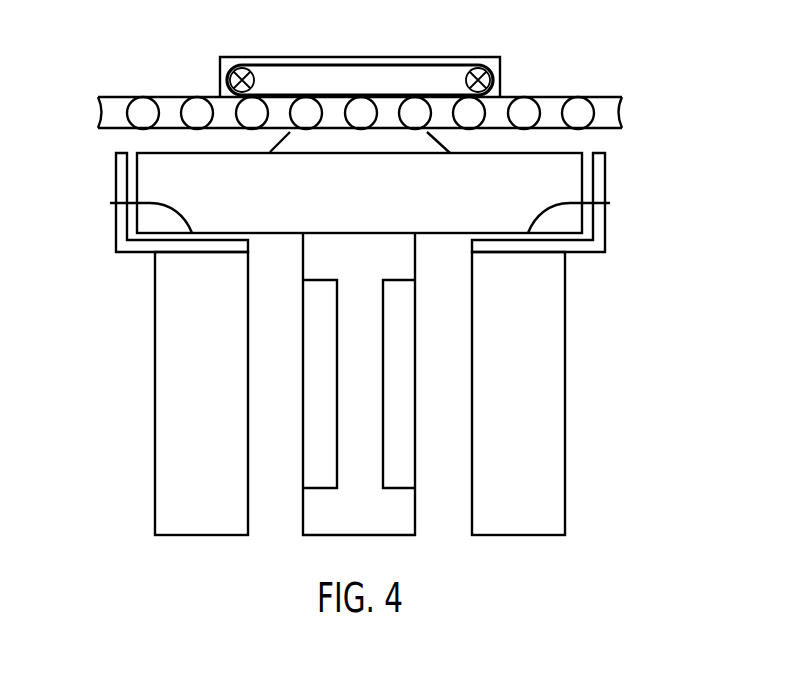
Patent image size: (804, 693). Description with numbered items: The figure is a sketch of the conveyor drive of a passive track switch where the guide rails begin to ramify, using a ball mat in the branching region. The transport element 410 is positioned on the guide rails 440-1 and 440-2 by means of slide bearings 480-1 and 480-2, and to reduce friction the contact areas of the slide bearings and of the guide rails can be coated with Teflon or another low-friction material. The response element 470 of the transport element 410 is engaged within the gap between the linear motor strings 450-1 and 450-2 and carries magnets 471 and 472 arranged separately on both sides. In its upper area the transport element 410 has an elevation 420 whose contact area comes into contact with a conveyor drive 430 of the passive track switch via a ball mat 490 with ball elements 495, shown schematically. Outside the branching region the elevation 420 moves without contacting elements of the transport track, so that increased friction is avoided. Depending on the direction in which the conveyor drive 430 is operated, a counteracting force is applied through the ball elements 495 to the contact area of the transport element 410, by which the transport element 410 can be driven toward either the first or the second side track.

The transport element 410 is at (380, 203).
The elevation 420 is at (437, 142).
The conveyor drive 430 is at (495, 57).
The guide rail 440-1 is at (598, 228).
The guide rail 440-2 is at (122, 228).
The linear motor string 450-1 is at (548, 397).
The linear motor string 450-2 is at (232, 397).
The response element 470 is at (362, 384).
The magnet 471 is at (318, 306).
The magnet 472 is at (400, 306).
The slide bearing 480-1 is at (610, 203).
The slide bearing 480-2 is at (110, 203).
The ball mat 490 is at (607, 97).
The ball element 495 is at (147, 108).